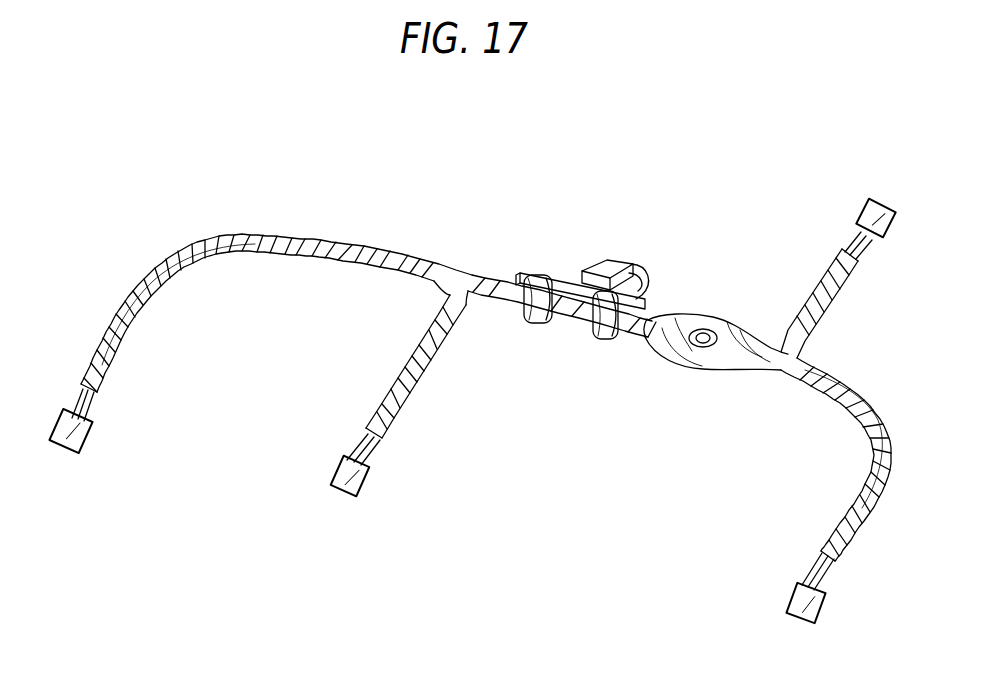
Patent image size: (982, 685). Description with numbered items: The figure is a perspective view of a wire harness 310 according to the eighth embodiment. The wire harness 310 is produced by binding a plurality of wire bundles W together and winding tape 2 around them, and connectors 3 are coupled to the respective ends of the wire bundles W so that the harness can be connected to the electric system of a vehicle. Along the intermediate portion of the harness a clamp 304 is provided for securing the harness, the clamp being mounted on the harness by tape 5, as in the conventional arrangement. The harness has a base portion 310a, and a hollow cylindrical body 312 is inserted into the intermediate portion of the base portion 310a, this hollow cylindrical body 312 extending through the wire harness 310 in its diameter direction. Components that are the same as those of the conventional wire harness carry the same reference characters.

The wire harness 310 is at (264, 200).
The tape 2 is at (338, 241).
The base portion 310a is at (452, 266).
The clamp 304 is at (613, 262).
The hollow cylindrical body 312 is at (705, 325).
The tape 5 is at (530, 323).
The connector 3 is at (80, 437).
The wire bundle W is at (92, 399).